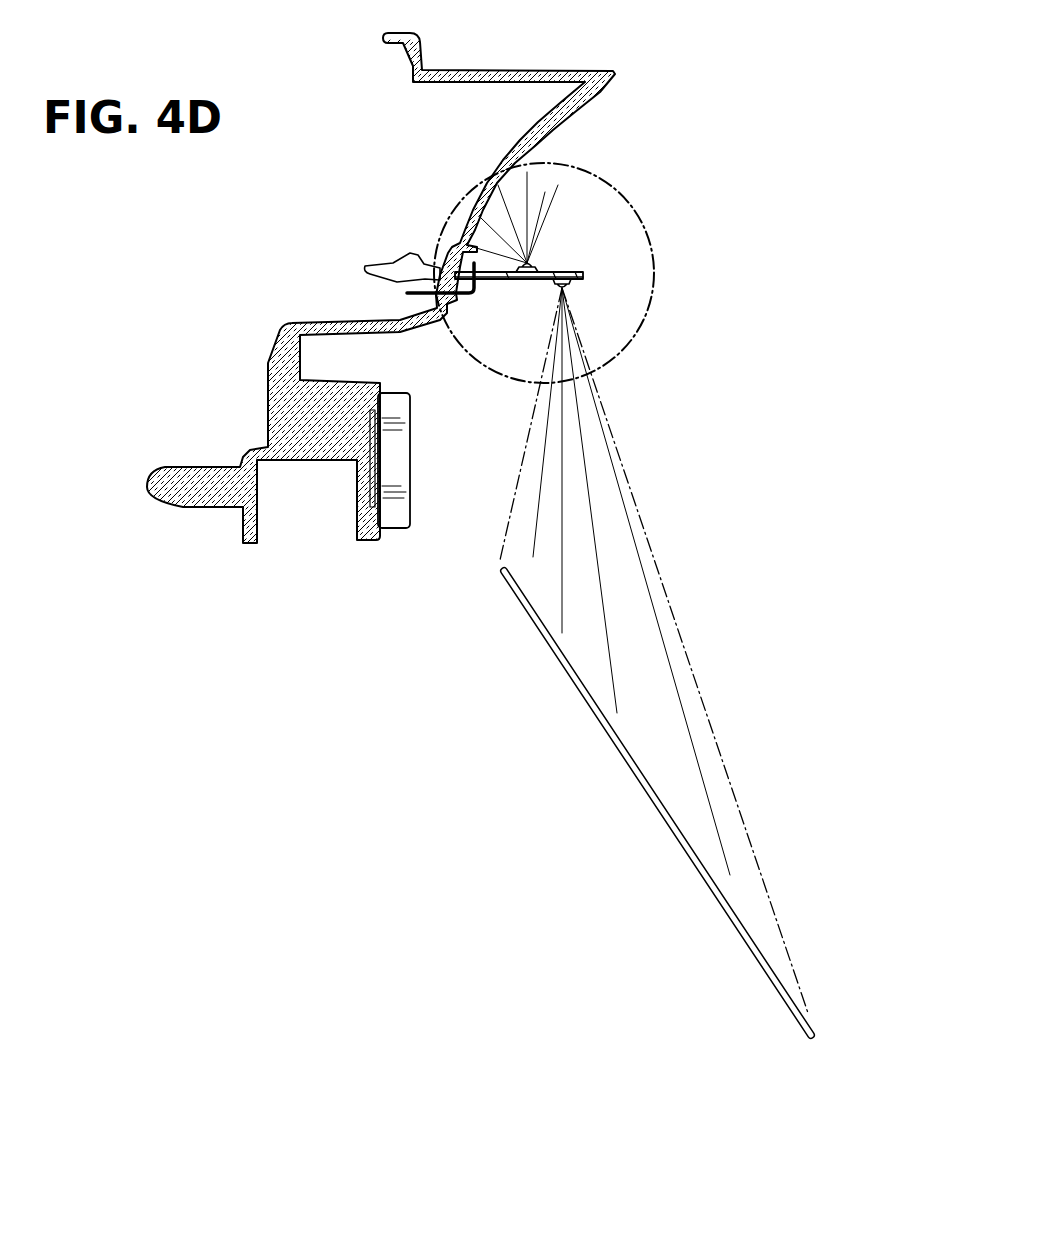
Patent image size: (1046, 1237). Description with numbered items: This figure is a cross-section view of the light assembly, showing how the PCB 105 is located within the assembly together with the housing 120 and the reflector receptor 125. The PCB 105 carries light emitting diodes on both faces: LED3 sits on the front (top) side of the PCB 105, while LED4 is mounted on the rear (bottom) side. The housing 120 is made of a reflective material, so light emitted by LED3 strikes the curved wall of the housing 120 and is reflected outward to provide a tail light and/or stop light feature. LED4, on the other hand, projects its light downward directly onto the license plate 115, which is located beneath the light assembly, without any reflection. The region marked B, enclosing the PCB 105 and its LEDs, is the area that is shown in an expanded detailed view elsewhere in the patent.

The housing 120 is at (570, 72).
The detail region B is at (463, 170).
The PCB 105 is at (557, 272).
The element LED3 is at (527, 265).
The element LED4 is at (565, 291).
The reflector receptor 125 is at (398, 460).
The license plate 115 is at (628, 767).